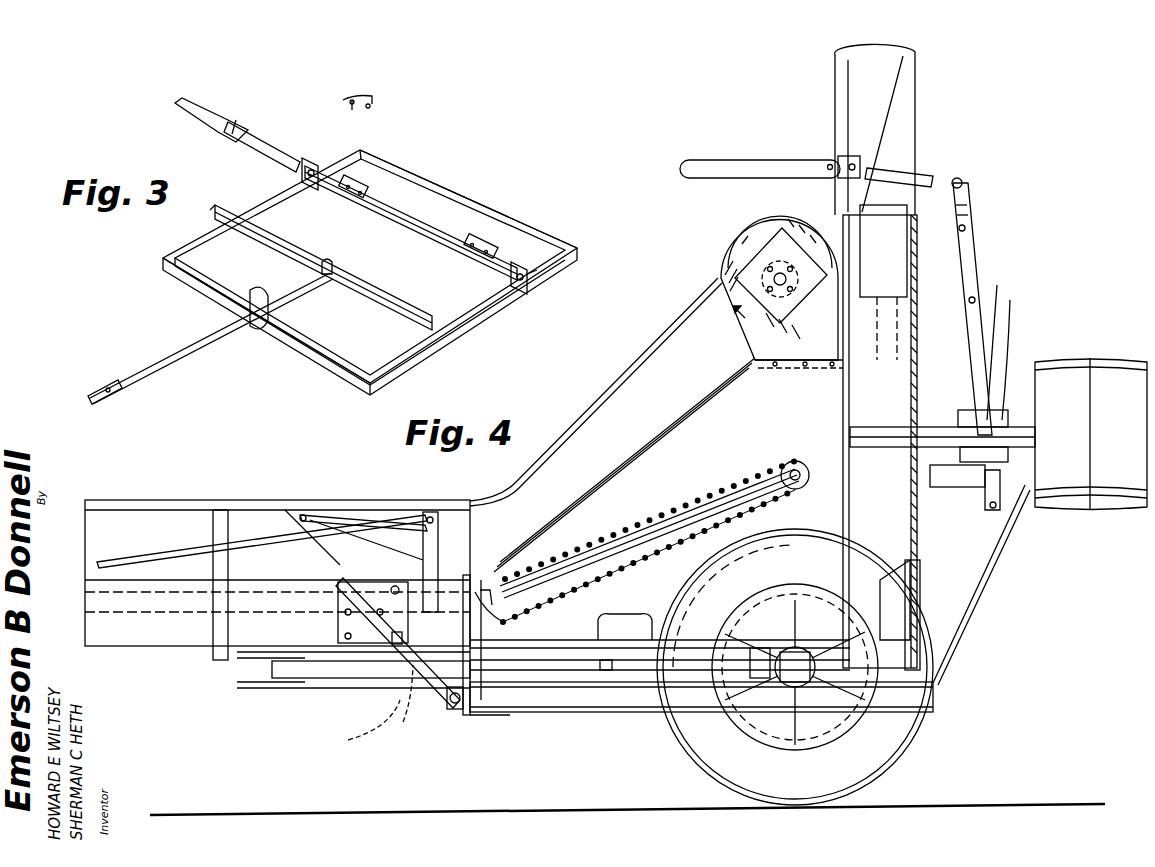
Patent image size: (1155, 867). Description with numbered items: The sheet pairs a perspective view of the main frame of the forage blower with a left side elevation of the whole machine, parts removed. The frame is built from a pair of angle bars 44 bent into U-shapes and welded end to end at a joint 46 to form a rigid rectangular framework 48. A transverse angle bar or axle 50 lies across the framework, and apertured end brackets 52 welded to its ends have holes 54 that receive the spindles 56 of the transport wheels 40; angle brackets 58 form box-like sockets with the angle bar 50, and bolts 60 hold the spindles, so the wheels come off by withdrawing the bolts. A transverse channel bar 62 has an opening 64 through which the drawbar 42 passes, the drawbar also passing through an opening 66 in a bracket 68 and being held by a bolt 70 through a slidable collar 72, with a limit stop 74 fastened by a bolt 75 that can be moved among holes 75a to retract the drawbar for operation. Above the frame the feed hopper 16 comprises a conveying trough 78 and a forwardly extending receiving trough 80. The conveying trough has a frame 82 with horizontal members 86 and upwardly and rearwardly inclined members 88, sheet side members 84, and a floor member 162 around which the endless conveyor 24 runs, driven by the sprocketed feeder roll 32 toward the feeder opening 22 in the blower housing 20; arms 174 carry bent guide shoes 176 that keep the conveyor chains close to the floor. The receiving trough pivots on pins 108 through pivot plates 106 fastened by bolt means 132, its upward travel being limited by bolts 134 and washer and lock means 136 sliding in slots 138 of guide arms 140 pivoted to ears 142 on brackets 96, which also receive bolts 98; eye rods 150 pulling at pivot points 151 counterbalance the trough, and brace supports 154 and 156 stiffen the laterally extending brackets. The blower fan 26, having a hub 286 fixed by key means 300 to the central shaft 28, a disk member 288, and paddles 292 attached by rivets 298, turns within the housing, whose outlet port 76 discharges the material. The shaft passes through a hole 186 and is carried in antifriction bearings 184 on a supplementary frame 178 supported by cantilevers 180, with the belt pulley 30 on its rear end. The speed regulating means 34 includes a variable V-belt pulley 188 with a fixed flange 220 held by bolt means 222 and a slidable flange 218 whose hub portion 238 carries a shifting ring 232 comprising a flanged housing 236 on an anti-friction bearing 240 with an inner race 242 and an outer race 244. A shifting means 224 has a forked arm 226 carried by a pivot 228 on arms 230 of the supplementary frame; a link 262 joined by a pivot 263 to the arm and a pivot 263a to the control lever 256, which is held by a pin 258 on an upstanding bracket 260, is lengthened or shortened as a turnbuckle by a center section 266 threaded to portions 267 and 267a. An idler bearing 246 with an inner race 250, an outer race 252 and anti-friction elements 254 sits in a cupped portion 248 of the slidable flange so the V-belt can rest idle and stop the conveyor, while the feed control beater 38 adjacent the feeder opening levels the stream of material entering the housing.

In FIG. 3, the feed hopper 16 is at (450, 130).
In FIG. 4, the blower housing 20 is at (930, 240).
In FIG. 4, the feeder opening 22 is at (815, 375).
In FIG. 4, the endless conveyor 24 is at (665, 500).
In FIG. 4, the blower fan 26 is at (912, 318).
In FIG. 4, the central shaft 28 is at (848, 418).
In FIG. 4, the belt pulley 30 is at (1098, 508).
In FIG. 4, the sprocketed feeder roll 32 is at (805, 462).
In FIG. 4, the speed regulating means 34 is at (1075, 250).
In FIG. 4, the feed control beater 38 is at (735, 240).
In FIG. 4, the transport wheels 40 is at (890, 745).
In FIG. 3, the drawbar 42 is at (210, 338).
In FIG. 4, the drawbar 42 is at (380, 660).
In FIG. 3, the angle bars 44 is at (188, 250).
In FIG. 3, the end-to-end joint 46 is at (455, 195).
In FIG. 3, the rectangular framework 48 is at (538, 235).
In FIG. 4, the rectangular framework 48 is at (940, 710).
In FIG. 3, the transverse angle bar or axle 50 is at (420, 238).
In FIG. 3, the apertured end brackets 52 is at (312, 160).
In FIG. 3, the holes 54 is at (540, 270).
In FIG. 3, the spindles 56 is at (228, 130).
In FIG. 3, the angle brackets 58 is at (455, 235).
In FIG. 3, the bolts 60 is at (371, 98).
In FIG. 3, the transverse channel bar 62 is at (262, 222).
In FIG. 3, the opening 64 is at (325, 283).
In FIG. 3, the opening 66 is at (264, 322).
In FIG. 3, the bracket 68 is at (258, 290).
In FIG. 3, the bolt 70 is at (332, 262).
In FIG. 4, the bolt 70 is at (760, 650).
In FIG. 3, the slidable collar 72 is at (324, 262).
In FIG. 4, the slidable collar 72 is at (745, 660).
In FIG. 3, the limit stop 74 is at (258, 320).
In FIG. 4, the limit stop 74 is at (395, 710).
In FIG. 4, the bolt 75 is at (361, 726).
In FIG. 4, the holes 75a is at (604, 672).
In FIG. 4, the tangentially extending outlet or port 76 is at (843, 82).
In FIG. 4, the conveying trough 78 is at (640, 355).
In FIG. 4, the receiving trough 80 is at (170, 488).
In FIG. 4, the frame 82 is at (580, 685).
In FIG. 4, the side members 84 is at (575, 435).
In FIG. 4, the frame members 86 is at (630, 630).
In FIG. 4, the frame members 88 is at (615, 645).
In FIG. 4, the brackets 96 is at (462, 710).
In FIG. 4, the bolts 98 is at (465, 600).
In FIG. 4, the pivot plates 106 is at (338, 620).
In FIG. 4, the pins 108 is at (395, 586).
In FIG. 4, the bolt means 132 is at (345, 636).
In FIG. 4, the bolts 134 is at (397, 648).
In FIG. 4, the washer and lock means 136 is at (408, 660).
In FIG. 4, the slots 138 is at (375, 635).
In FIG. 4, the slotted guide arms 140 is at (432, 682).
In FIG. 4, the ears 142 is at (455, 690).
In FIG. 4, the eye rods 150 is at (145, 562).
In FIG. 4, the pivot points 151 is at (410, 500).
In FIG. 4, the brace support 154 is at (345, 528).
In FIG. 4, the brace support 156 is at (462, 505).
In FIG. 4, the floor member 162 is at (612, 535).
In FIG. 4, the arms 174 is at (501, 730).
In FIG. 4, the bent guide shoes 176 is at (492, 585).
In FIG. 4, the supplementary frame 178 is at (990, 515).
In FIG. 4, the cantilevers 180 is at (980, 590).
In FIG. 4, the antifriction bearings 184 is at (928, 425).
In FIG. 4, the hole 186 is at (918, 465).
In FIG. 4, the variable V-belt pulley 188 is at (975, 490).
In FIG. 4, the flange 218 is at (965, 410).
In FIG. 4, the flange 220 is at (940, 410).
In FIG. 4, the bolt means 222 is at (955, 420).
In FIG. 4, the shifting means 224 is at (975, 180).
In FIG. 4, the forked arm 226 is at (972, 255).
In FIG. 4, the pivot 228 is at (1005, 500).
In FIG. 4, the arms 230 is at (1010, 490).
In FIG. 4, the shifting ring 232 is at (980, 410).
In FIG. 4, the flanged housing 236 is at (988, 412).
In FIG. 4, the hub portion 238 is at (990, 418).
In FIG. 4, the anti-friction bearing 240 is at (968, 482).
In FIG. 4, the inner race 242 is at (1010, 452).
In FIG. 4, the outer race 244 is at (1010, 462).
In FIG. 4, the anti-friction bearing 246 is at (1020, 345).
In FIG. 4, the cupped portion 248 is at (999, 338).
In FIG. 4, the inner race 250 is at (1008, 430).
In FIG. 4, the outer race 252 is at (1008, 438).
In FIG. 4, the anti-friction elements 254 is at (955, 482).
In FIG. 4, the clutch or control lever 256 is at (800, 160).
In FIG. 4, the pin 258 is at (858, 160).
In FIG. 4, the upstanding bracket 260 is at (883, 273).
In FIG. 4, the link 262 is at (925, 172).
In FIG. 4, the pivot 263 is at (962, 178).
In FIG. 4, the pivot 263a is at (828, 163).
In FIG. 4, the center section 266 is at (898, 170).
In FIG. 4, the portion 267 is at (960, 168).
In FIG. 4, the portion 267a is at (866, 168).
In FIG. 4, the hub 286 is at (860, 452).
In FIG. 4, the disk member 288 is at (902, 382).
In FIG. 4, the paddles 292 is at (870, 285).
In FIG. 4, the rivets 298 is at (912, 570).
In FIG. 4, the key means 300 is at (862, 420).